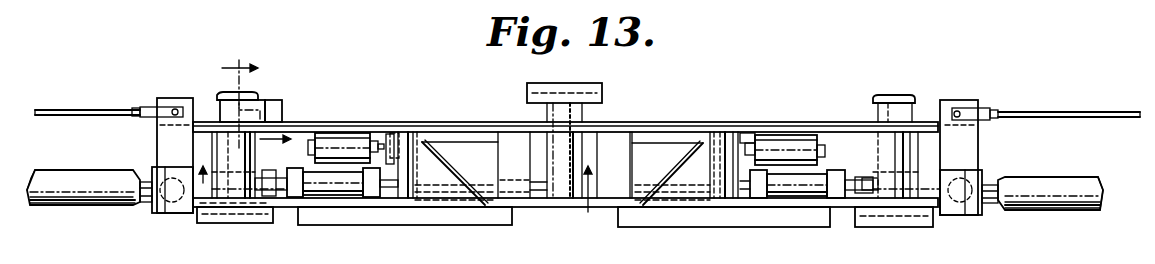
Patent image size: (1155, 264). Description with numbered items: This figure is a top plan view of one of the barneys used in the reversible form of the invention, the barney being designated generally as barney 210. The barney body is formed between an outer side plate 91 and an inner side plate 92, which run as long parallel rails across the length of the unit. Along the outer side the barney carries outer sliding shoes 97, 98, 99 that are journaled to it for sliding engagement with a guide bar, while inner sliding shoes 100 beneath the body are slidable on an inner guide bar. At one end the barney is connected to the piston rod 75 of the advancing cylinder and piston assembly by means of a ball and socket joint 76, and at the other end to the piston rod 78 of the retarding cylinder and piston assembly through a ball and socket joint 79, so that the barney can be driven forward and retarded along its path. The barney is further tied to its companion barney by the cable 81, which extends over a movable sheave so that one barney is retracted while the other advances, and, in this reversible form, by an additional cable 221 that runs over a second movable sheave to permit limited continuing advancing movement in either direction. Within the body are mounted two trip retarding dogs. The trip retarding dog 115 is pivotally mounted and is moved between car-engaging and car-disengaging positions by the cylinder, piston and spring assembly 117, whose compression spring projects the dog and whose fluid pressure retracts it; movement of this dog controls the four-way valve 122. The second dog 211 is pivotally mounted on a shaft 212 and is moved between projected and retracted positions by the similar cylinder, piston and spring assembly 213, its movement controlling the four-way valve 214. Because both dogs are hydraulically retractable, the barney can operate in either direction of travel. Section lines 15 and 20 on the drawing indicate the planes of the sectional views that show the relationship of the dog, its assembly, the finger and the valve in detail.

The section line 15 is at (400, 192).
The section line 20 is at (247, 104).
The piston rod 75 is at (1050, 208).
The ball and socket joint 76 is at (975, 218).
The piston rod 78 is at (86, 206).
The ball and socket joint 79 is at (155, 212).
The cable 81 is at (1070, 113).
The outer side plate 91 is at (470, 108).
The inner side plate 92 is at (552, 210).
The outer sliding shoe 97 is at (585, 86).
The outer sliding shoe 98 is at (248, 92).
The outer sliding shoe 99 is at (893, 95).
The inner sliding shoe 100 is at (222, 222).
The trip retarding dog 115 is at (465, 222).
The cylinder, piston and spring assembly 117 is at (338, 198).
The four-way valve 122 is at (333, 135).
The barney 210 is at (683, 122).
The dog 211 is at (665, 218).
The shaft 212 is at (730, 130).
The cylinder, piston and spring assembly 213 is at (800, 196).
The four-way valve 214 is at (793, 140).
The cable 221 is at (66, 110).